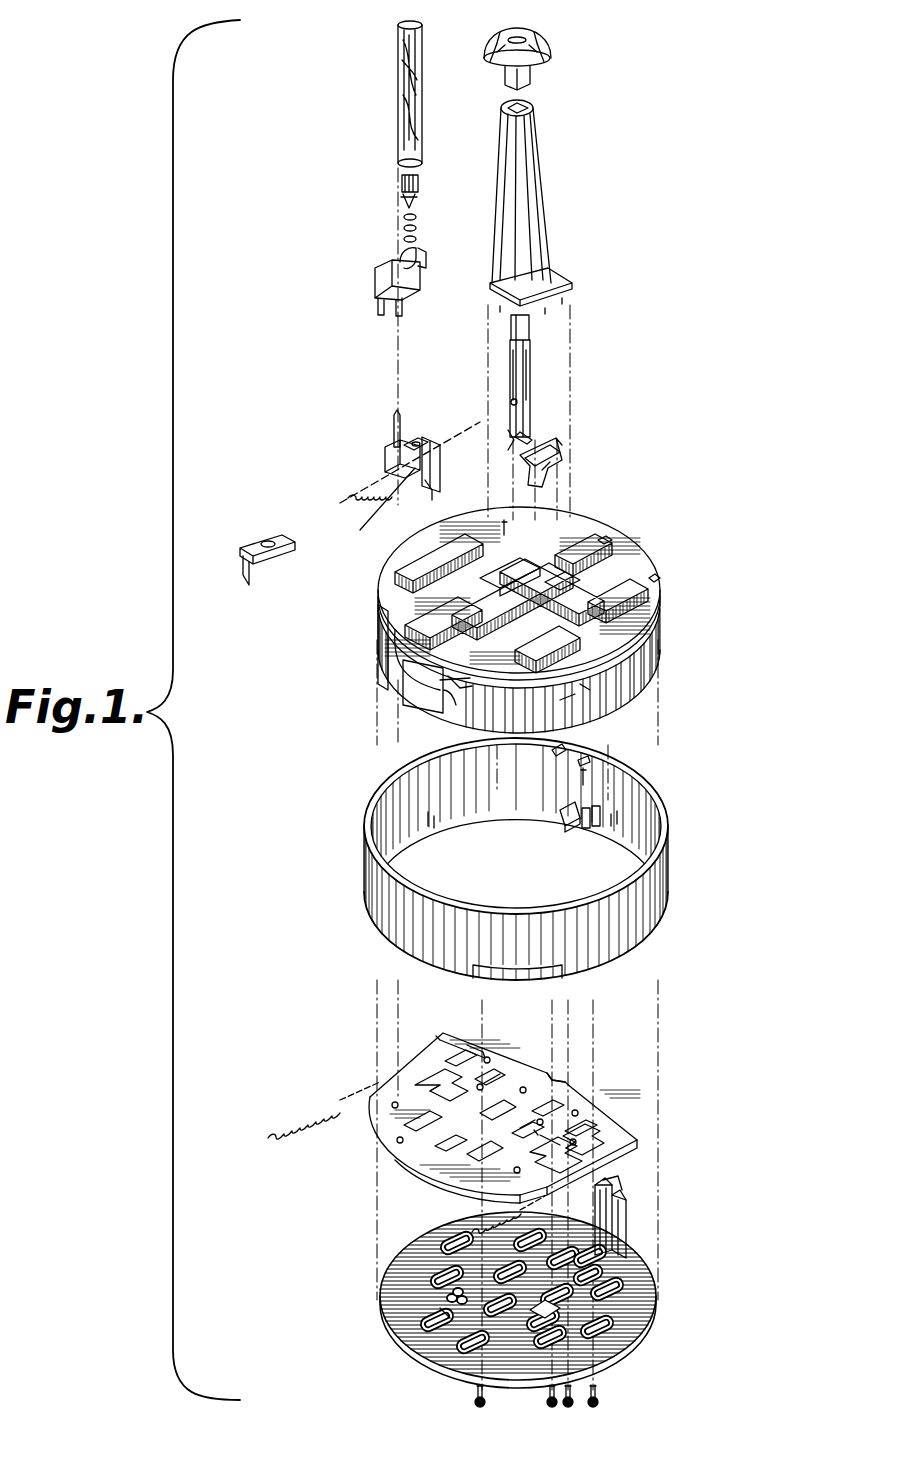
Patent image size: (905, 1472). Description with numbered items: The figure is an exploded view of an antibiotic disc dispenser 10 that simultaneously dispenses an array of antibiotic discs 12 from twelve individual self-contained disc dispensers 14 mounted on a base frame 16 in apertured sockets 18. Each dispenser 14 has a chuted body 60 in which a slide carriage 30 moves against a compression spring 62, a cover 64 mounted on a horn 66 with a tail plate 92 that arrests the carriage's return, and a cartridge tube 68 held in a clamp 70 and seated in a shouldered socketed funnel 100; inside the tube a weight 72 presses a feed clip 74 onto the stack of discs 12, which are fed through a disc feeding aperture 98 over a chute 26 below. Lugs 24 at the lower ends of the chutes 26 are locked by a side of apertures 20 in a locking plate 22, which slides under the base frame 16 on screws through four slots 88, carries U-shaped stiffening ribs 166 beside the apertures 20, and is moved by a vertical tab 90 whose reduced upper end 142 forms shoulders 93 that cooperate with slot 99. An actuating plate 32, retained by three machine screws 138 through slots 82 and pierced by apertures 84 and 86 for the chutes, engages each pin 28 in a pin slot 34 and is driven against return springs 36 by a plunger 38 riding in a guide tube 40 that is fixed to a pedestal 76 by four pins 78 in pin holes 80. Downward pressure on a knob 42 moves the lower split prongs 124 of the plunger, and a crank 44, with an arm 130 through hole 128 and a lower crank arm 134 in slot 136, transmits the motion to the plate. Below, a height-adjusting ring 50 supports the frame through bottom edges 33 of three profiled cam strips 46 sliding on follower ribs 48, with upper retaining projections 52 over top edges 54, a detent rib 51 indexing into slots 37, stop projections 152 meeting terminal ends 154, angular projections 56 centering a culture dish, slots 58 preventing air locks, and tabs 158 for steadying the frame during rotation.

The antibiotic disc dispenser 10 is at (737, 664).
The antibiotic discs 12 is at (404, 239).
The individual self-contained disc dispensers 14 is at (392, 422).
The base frame 16 is at (640, 540).
The apertured sockets 18 is at (393, 612).
The apertures 20 is at (552, 1318).
The locking plate 22 is at (380, 1306).
The lugs 24 is at (430, 494).
The chutes 26 is at (440, 468).
The pin 28 is at (248, 578).
The slide carriage 30 is at (238, 538).
The actuating plate 32 is at (595, 1112).
The bottom edges 33 is at (445, 735).
The pin slots 34 is at (565, 1075).
The return springs 36 is at (298, 1122).
The slots 37 is at (588, 700).
The plunger 38 is at (530, 367).
The guide tube 40 is at (522, 192).
The knob 42 is at (548, 63).
The crank 44 is at (560, 462).
The profiled cam strips 46 is at (378, 656).
The follower ribs 48 is at (578, 830).
The height-adjusting ring 50 is at (672, 896).
The detent rib 51 is at (582, 772).
The upper retaining projections 52 is at (587, 764).
The top edges 54 is at (468, 698).
The angular projections 56 is at (564, 822).
The slots 58 is at (398, 840).
The chuted body 60 is at (371, 513).
The compression spring 62 is at (352, 488).
The cover 64 is at (370, 287).
The horn 66 is at (402, 433).
The cartridge tube 68 is at (405, 78).
The clamp 70 is at (424, 264).
The weight 72 is at (404, 183).
The feed clip 74 is at (404, 201).
The pedestal 76 is at (482, 583).
The pins 78 is at (565, 301).
The pin holes 80 is at (580, 582).
The slots 82 is at (525, 1122).
The apertures 84 is at (475, 1052).
The apertures 86 is at (435, 1078).
The slots 88 is at (665, 1290).
The vertical tab 90 is at (626, 1238).
The tail plate 92 is at (380, 312).
The shoulders 93 is at (608, 1192).
The disc feeding aperture 98 is at (266, 538).
The slot 99 is at (605, 538).
The shouldered socketed funnel 100 is at (418, 445).
The lower split prongs 124 is at (528, 445).
The hole 128 is at (510, 402).
The arm 130 is at (545, 448).
The lower crank arm 134 is at (524, 445).
The slot 136 is at (525, 1088).
The machine screws 138 is at (598, 1396).
The upper end 142 is at (620, 1190).
The stop projections 152 is at (560, 756).
The terminal ends 154 is at (455, 692).
The tabs 158 is at (505, 519).
The U-shaped stiffening ribs 166 is at (445, 1318).